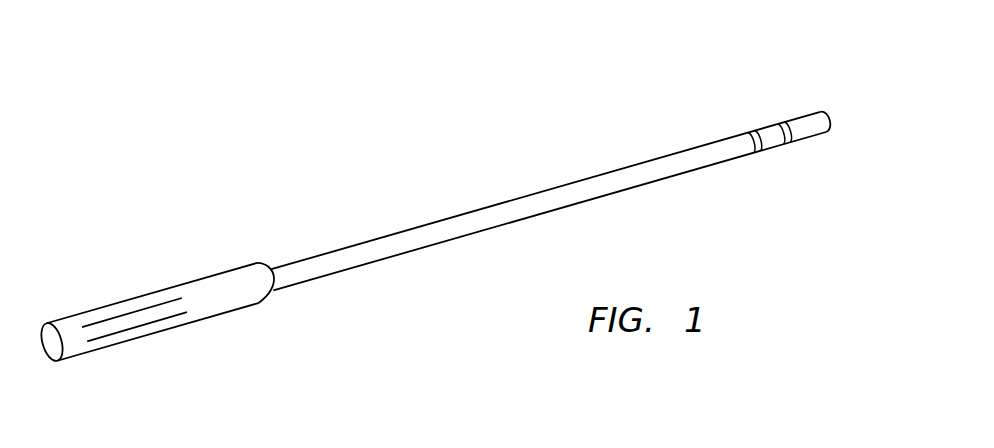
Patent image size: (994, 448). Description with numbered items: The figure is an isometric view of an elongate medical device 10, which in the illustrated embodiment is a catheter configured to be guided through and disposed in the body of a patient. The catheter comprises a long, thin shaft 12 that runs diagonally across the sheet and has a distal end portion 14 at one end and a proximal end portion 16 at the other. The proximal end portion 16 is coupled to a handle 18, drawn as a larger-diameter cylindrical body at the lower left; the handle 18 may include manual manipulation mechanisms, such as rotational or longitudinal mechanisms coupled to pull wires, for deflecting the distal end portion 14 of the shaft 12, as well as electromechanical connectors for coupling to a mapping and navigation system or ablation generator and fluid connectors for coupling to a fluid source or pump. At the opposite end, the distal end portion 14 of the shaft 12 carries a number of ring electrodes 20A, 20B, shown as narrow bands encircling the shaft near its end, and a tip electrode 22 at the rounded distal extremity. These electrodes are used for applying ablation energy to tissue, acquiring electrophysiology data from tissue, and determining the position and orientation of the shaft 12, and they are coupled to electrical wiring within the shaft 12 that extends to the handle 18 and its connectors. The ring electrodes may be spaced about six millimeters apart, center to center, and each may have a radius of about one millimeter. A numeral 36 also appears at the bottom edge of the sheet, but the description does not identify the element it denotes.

The elongate medical device 10 is at (336, 188).
The shaft 12 is at (478, 236).
The distal end portion 14 is at (768, 93).
The proximal end portion 16 is at (322, 299).
The handle 18 is at (83, 357).
The ring electrode 20A is at (785, 142).
The ring electrode 20B is at (758, 143).
The tip electrode 22 is at (817, 120).
The element of adjacent figure 36 is at (755, 447).